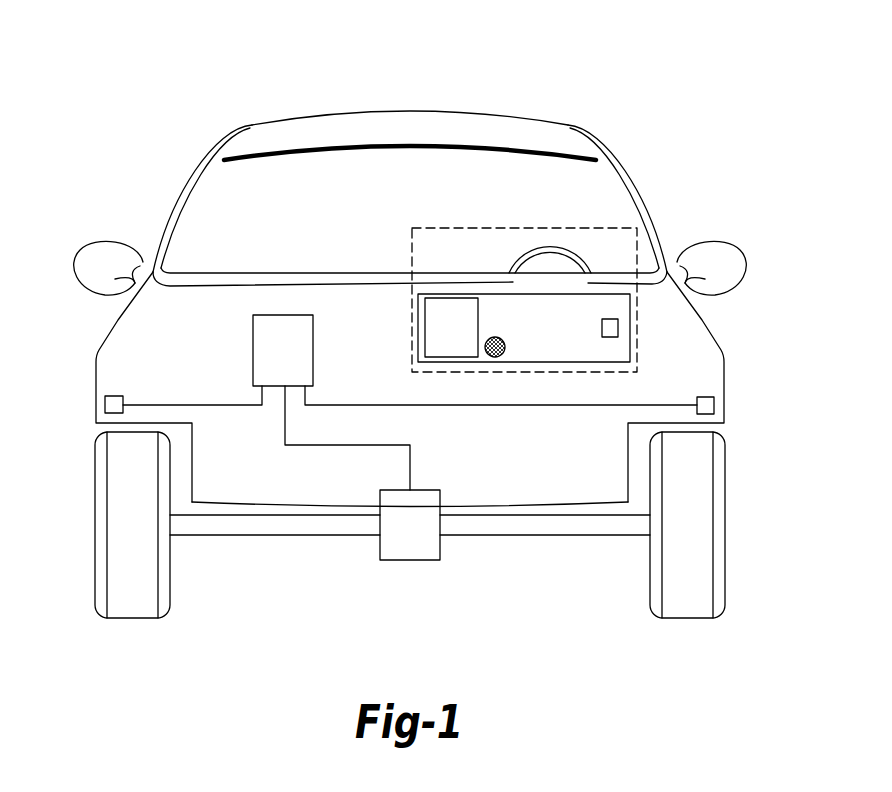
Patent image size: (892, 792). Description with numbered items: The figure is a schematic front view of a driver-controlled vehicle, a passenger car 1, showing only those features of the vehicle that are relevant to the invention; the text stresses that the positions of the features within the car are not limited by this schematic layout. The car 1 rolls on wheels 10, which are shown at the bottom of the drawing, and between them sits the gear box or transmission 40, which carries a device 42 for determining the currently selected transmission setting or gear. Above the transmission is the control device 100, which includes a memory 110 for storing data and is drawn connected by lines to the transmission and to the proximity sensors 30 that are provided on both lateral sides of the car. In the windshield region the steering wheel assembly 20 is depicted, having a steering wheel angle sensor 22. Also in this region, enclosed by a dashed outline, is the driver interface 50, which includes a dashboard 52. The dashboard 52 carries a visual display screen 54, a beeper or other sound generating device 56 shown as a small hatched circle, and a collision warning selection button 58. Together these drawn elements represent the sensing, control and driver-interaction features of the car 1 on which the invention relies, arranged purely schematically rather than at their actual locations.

The passenger car 1 is at (436, 84).
The wheels 10 is at (132, 618).
The steering wheel assembly 20 is at (550, 224).
The steering wheel angle sensor 22 is at (552, 250).
The proximity sensors 30 is at (105, 405).
The gear box or transmission 40 is at (409, 563).
The device for determining the currently selected transmission setting or gear 42 is at (410, 560).
The driver interface 50 is at (483, 228).
The dashboard 52 is at (456, 294).
The visual display screen 54 is at (425, 325).
The beeper or other sound generating device 56 is at (497, 357).
The collision warning selection button 58 is at (618, 328).
The control device 100 is at (270, 402).
The memory 110 is at (253, 343).